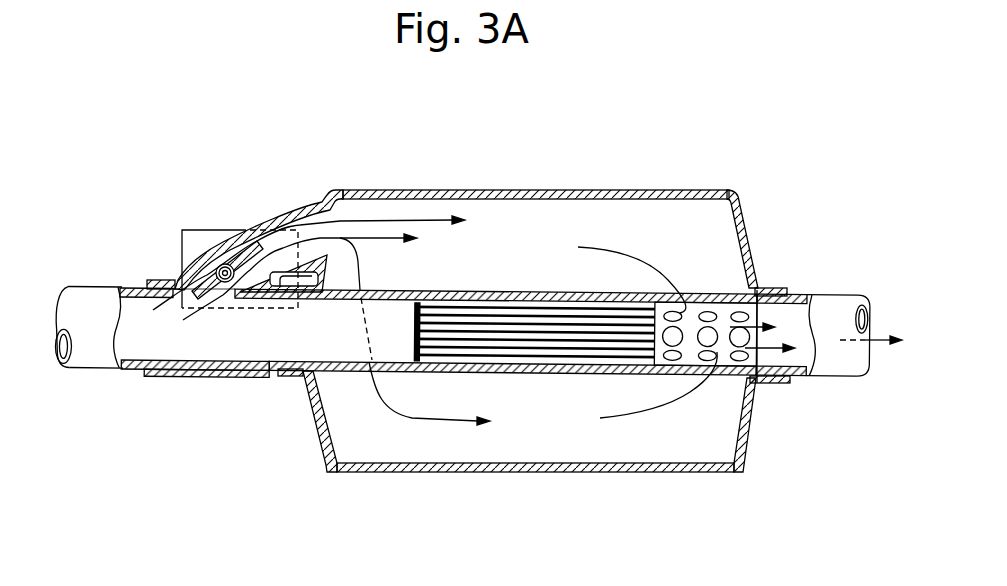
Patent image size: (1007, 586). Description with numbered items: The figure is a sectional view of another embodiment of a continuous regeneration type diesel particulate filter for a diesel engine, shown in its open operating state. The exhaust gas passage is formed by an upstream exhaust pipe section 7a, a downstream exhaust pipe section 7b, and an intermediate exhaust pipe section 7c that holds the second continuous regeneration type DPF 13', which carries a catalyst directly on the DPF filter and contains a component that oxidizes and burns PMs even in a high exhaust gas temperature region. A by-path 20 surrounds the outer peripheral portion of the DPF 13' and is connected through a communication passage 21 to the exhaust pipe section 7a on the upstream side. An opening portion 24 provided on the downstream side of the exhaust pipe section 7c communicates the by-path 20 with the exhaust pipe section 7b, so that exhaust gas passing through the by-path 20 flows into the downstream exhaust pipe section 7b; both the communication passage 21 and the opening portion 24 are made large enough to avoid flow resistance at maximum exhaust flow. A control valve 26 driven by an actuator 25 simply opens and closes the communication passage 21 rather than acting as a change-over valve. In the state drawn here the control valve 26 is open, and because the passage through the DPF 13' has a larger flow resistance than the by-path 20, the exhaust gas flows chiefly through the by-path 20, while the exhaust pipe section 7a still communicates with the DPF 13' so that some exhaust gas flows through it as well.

The exhaust pipe section 7a is at (133, 356).
The exhaust pipe section 7b is at (795, 310).
The exhaust pipe section 7c is at (323, 335).
The second continuous regeneration type DPF 13' is at (534, 422).
The by-path 20 is at (540, 248).
The communication passage 21 is at (270, 247).
The opening portion 24 is at (708, 330).
The actuator 25 is at (190, 230).
The control valve 26 is at (222, 300).